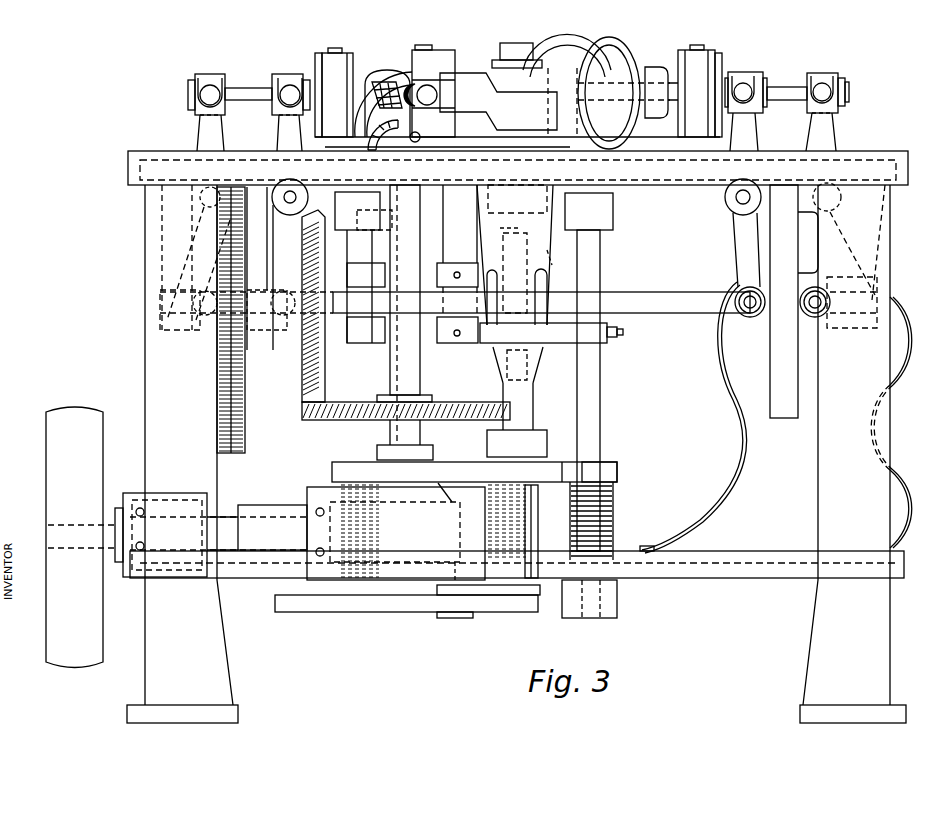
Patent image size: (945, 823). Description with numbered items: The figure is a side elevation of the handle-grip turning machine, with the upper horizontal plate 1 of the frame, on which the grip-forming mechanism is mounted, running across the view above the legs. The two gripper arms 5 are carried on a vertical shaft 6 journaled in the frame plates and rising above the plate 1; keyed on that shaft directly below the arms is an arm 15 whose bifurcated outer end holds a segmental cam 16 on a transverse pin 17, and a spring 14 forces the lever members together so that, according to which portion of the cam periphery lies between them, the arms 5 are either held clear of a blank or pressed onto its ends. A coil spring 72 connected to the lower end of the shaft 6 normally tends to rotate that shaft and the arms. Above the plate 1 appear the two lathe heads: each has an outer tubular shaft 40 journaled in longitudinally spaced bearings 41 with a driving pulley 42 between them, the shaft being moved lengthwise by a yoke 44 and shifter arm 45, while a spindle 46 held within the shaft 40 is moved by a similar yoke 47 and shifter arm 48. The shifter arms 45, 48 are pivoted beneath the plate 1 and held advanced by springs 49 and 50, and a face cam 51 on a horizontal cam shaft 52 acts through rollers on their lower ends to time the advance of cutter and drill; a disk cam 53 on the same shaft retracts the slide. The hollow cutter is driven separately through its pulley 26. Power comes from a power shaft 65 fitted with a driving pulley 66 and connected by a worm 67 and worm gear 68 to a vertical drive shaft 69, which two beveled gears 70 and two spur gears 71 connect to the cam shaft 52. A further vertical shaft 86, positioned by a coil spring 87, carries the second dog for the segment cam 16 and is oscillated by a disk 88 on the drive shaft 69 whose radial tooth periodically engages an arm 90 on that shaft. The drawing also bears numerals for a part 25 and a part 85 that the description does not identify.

The upper plate 1 is at (128, 167).
The gripper arms 5 is at (488, 74).
The vertical shaft 6 is at (530, 376).
The spring 14 is at (414, 66).
The arm 15 is at (473, 145).
The segmental cam 16 is at (370, 97).
The transverse pin 17 is at (365, 122).
The eccentric 25 is at (548, 40).
The pulley 26 is at (626, 47).
The outer tubular shaft 40 is at (358, 77).
The bearings 41 is at (315, 50).
The driving pulley 42 is at (386, 68).
The yoke 44 is at (750, 76).
The shifter arm 45 is at (280, 135).
The spindle 46 is at (250, 78).
The yoke 47 is at (820, 76).
The shifter arm 48 is at (200, 131).
The spring 49 is at (745, 486).
The spring 50 is at (912, 493).
The face cam 51 is at (785, 412).
The cam shaft 52 is at (678, 294).
The disk cam 53 is at (500, 228).
The power shaft 65 is at (111, 508).
The driving pulley 66 is at (46, 437).
The worm 67 is at (455, 582).
The worm gear 68 is at (275, 517).
The vertical drive shaft 69 is at (420, 373).
The beveled gears 70 is at (305, 383).
The spur gears 71 is at (247, 452).
The coil spring 72 is at (540, 490).
The guide 85 is at (548, 214).
The vertical shaft 86 is at (601, 273).
The coil spring 87 is at (608, 497).
The disk 88 is at (448, 465).
The arm 90 is at (618, 468).